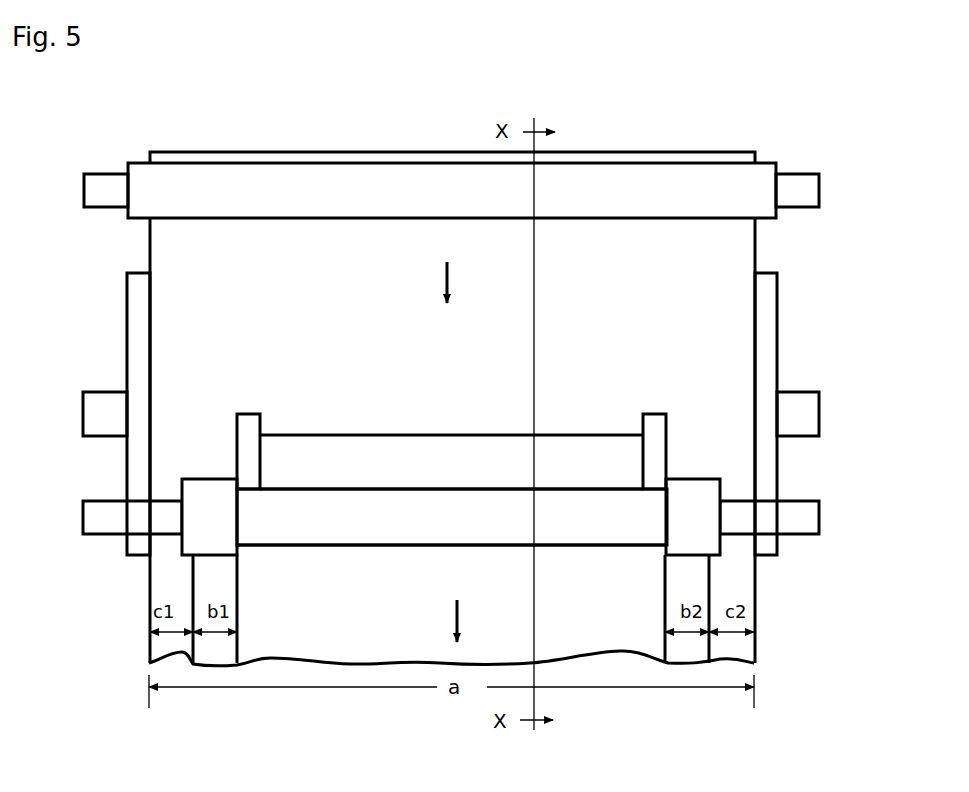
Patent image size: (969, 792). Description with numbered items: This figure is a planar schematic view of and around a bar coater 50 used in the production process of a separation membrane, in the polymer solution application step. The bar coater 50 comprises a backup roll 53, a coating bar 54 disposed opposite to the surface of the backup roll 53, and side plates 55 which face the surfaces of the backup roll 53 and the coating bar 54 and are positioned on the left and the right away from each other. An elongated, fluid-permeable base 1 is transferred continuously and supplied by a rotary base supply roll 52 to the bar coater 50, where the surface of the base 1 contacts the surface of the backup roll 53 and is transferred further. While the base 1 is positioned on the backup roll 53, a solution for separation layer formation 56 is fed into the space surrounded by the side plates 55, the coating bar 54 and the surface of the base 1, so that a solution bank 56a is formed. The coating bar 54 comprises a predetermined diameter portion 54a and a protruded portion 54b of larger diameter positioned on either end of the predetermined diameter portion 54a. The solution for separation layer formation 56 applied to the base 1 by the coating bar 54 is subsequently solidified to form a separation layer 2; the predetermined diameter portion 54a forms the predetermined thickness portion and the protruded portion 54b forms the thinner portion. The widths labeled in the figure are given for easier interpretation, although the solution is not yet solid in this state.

The base 1 is at (193, 271).
The separation layer 2 is at (347, 632).
The bar coater 50 is at (824, 454).
The base supply roll 52 is at (743, 185).
The backup roll 53 is at (778, 358).
The coating bar 54 is at (577, 547).
The predetermined diameter portion 54a is at (436, 523).
The protruded portion 54b is at (193, 544).
The side plate 55 is at (237, 414).
The solution for separation layer formation 56 is at (382, 433).
The solution bank 56a is at (423, 458).